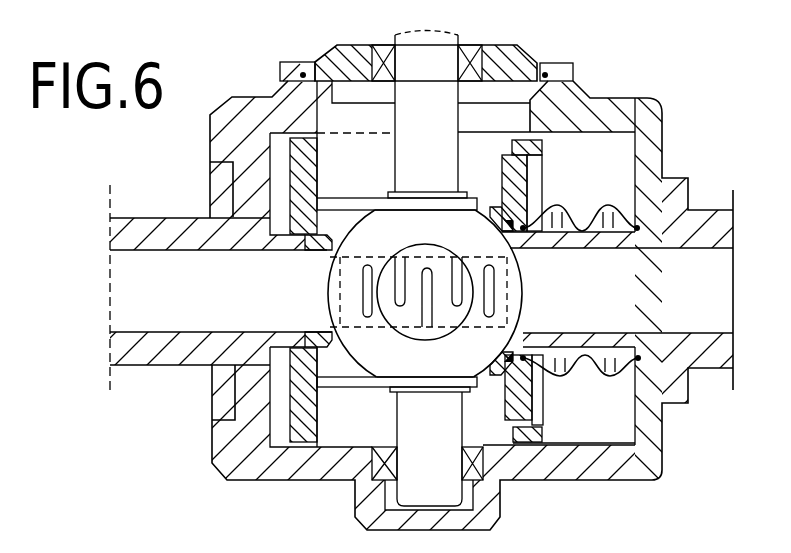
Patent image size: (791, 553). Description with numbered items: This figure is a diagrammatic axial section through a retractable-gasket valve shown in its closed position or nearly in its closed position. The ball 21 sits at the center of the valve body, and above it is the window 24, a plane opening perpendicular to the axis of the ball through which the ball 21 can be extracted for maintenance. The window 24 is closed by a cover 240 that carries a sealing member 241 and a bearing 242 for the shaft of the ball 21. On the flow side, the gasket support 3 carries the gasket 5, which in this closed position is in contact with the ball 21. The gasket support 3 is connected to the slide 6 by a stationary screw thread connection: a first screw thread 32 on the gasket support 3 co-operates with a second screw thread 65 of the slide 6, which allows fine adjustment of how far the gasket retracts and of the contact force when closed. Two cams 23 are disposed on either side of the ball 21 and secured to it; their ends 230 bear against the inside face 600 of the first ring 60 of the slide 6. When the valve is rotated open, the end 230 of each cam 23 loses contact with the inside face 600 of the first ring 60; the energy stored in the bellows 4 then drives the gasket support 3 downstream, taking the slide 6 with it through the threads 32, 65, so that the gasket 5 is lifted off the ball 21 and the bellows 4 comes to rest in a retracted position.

The gasket support 3 is at (543, 392).
The bellows 4 is at (568, 206).
The gasket 5 is at (502, 208).
The slide 6 is at (282, 362).
The ball 21 is at (508, 300).
The cam 23 is at (348, 380).
The window 24 is at (318, 122).
The first screw thread 32 is at (500, 432).
The first ring 60 is at (264, 252).
The second screw thread 65 is at (543, 417).
The end of the cam 230 is at (313, 186).
The cover 240 is at (505, 56).
The sealing member 241 is at (300, 73).
The bearing 242 is at (384, 62).
The inside face 600 is at (318, 153).